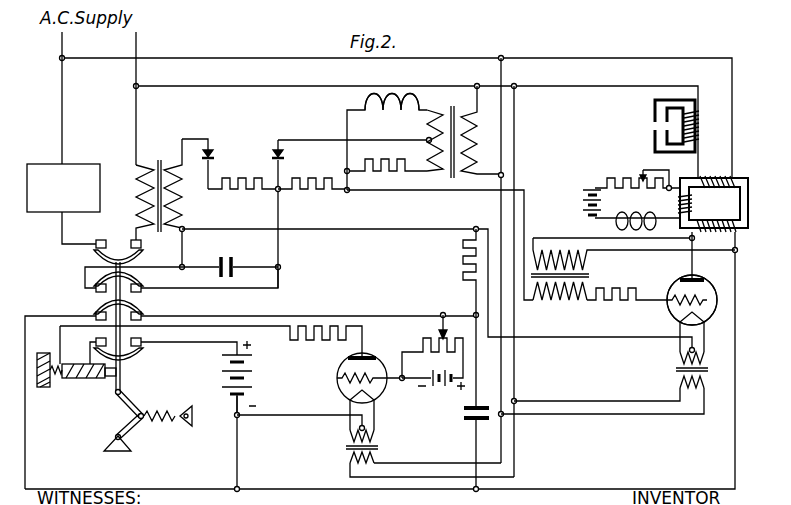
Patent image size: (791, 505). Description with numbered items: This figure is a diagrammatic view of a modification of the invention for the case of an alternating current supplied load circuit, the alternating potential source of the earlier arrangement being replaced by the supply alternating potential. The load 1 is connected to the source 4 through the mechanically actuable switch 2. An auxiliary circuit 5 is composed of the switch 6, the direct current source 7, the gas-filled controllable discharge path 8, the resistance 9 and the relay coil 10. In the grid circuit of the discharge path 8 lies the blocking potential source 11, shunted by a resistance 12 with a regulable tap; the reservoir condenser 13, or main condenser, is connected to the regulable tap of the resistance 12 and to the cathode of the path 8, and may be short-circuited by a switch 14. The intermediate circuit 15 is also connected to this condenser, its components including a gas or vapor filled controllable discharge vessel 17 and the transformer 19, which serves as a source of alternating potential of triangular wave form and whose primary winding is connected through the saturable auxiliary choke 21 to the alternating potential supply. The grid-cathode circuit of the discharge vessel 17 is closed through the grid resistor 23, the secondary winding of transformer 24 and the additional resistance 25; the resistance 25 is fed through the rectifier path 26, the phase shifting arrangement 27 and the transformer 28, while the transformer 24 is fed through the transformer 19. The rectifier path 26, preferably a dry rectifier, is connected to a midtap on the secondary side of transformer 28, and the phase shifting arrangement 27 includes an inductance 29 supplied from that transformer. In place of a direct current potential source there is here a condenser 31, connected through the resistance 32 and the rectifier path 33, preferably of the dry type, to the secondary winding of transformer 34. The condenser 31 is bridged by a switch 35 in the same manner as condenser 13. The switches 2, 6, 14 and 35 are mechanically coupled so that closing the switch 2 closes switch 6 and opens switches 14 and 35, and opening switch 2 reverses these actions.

The load 1 is at (98, 164).
The mechanically actuable switch 2 is at (117, 250).
The source 4 is at (62, 44).
The auxiliary circuit 5 is at (282, 371).
The switch 6 is at (140, 350).
The direct current source 7 is at (252, 392).
The gas-filled controllable discharge path 8 is at (336, 380).
The resistance 9 is at (314, 344).
The relay coil 10 is at (74, 376).
The blocking potential source 11 is at (438, 392).
The resistance with regulable tap 12 is at (416, 338).
The reservoir condenser 13 is at (468, 421).
The switch 14 is at (136, 303).
The intermediate circuit 15 is at (663, 325).
The gas or vapor filled controllable discharge vessel 17 is at (712, 292).
The transformer 19 is at (751, 181).
The saturable auxiliary choke 21 is at (696, 119).
The grid resistor 23 is at (634, 289).
The transformer 24 is at (590, 281).
The additional resistance 25 is at (314, 190).
The rectifier path 26 is at (292, 158).
The phase shifting arrangement 27 is at (401, 141).
The transformer 28 is at (452, 107).
The inductance 29 is at (368, 101).
The condenser 31 is at (244, 250).
The resistance 32 is at (226, 178).
The rectifier path 33 is at (212, 150).
The transformer 34 is at (158, 165).
The switch 35 is at (98, 290).